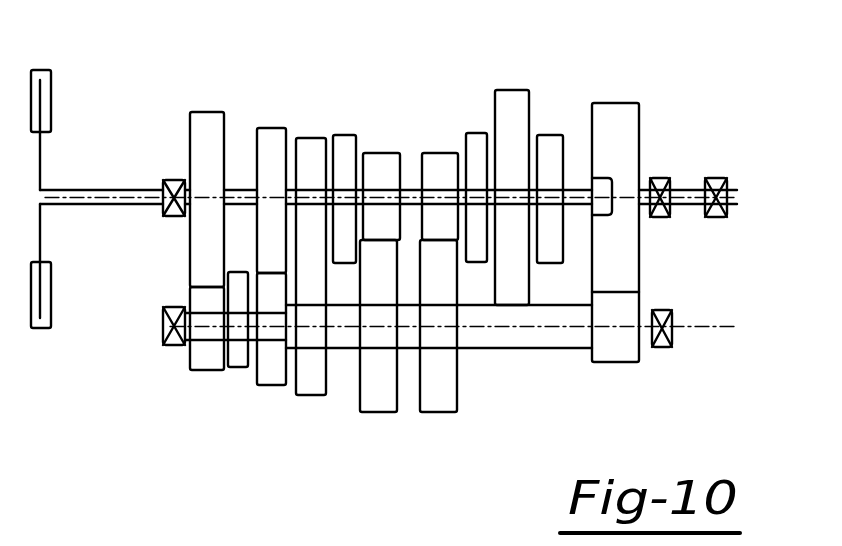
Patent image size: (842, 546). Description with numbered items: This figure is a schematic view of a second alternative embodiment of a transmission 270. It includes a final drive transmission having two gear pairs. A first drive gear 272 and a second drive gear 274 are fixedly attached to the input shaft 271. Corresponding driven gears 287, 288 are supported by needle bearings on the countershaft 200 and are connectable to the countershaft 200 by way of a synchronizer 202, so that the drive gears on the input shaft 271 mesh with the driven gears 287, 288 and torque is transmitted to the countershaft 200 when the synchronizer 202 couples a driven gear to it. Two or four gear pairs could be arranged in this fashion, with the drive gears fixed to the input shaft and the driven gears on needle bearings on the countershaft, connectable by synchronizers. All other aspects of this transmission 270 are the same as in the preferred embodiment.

The transmission 270 is at (678, 60).
The input shaft 271 is at (76, 197).
The first drive gear 272 is at (270, 127).
The second drive gear 274 is at (210, 111).
The driven gear 287 is at (270, 386).
The driven gear 288 is at (197, 371).
The synchronizer 202 is at (237, 368).
The countershaft 200 is at (505, 346).